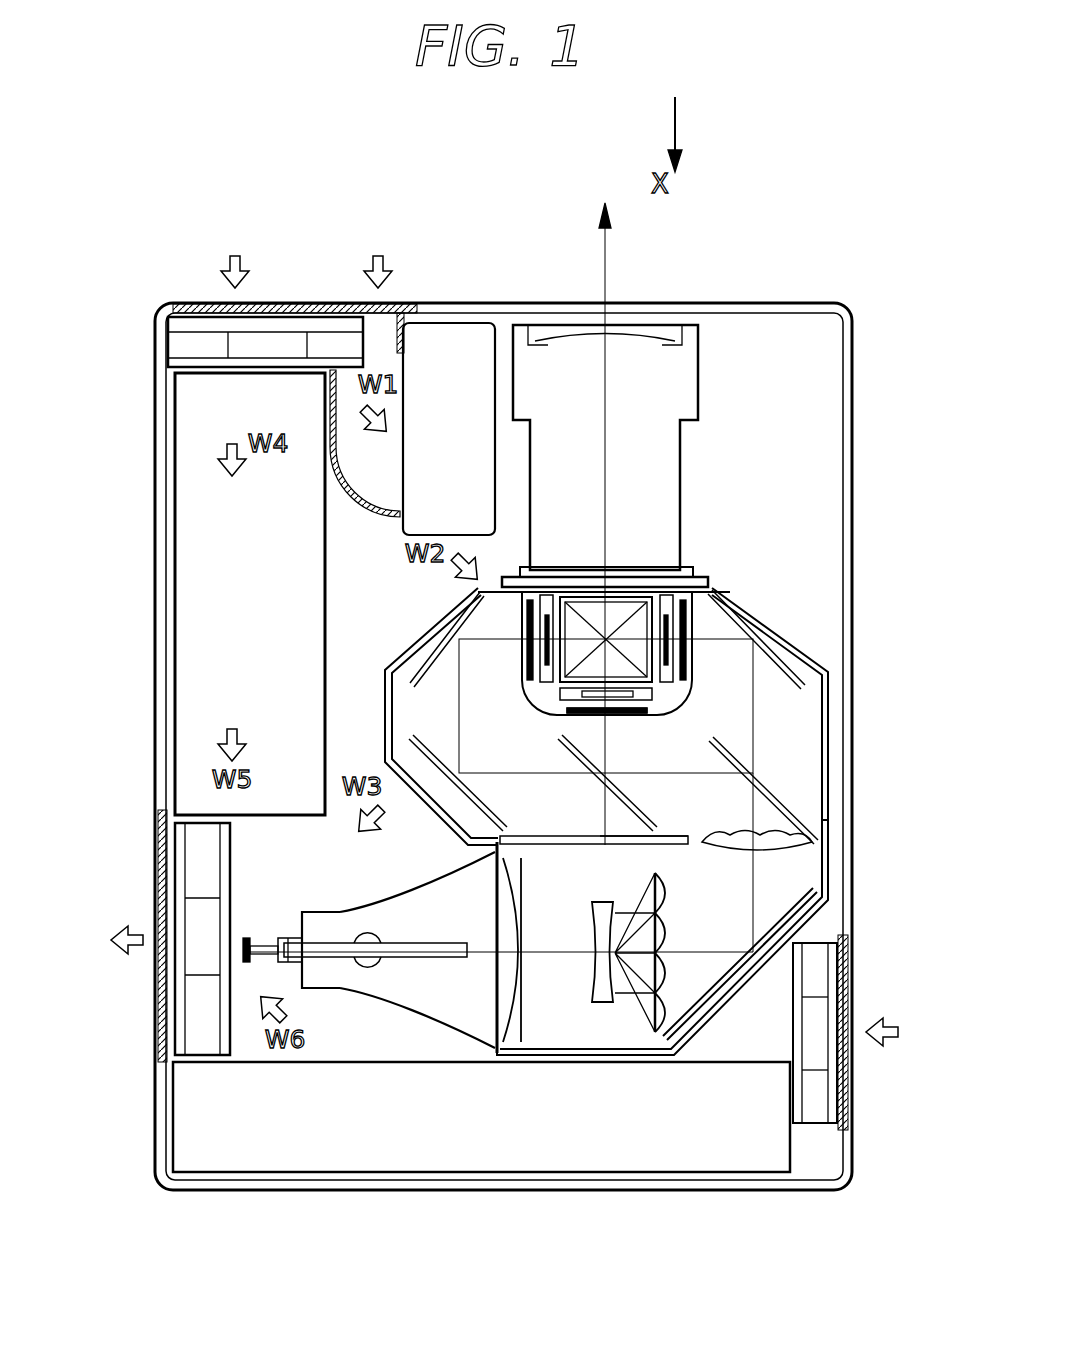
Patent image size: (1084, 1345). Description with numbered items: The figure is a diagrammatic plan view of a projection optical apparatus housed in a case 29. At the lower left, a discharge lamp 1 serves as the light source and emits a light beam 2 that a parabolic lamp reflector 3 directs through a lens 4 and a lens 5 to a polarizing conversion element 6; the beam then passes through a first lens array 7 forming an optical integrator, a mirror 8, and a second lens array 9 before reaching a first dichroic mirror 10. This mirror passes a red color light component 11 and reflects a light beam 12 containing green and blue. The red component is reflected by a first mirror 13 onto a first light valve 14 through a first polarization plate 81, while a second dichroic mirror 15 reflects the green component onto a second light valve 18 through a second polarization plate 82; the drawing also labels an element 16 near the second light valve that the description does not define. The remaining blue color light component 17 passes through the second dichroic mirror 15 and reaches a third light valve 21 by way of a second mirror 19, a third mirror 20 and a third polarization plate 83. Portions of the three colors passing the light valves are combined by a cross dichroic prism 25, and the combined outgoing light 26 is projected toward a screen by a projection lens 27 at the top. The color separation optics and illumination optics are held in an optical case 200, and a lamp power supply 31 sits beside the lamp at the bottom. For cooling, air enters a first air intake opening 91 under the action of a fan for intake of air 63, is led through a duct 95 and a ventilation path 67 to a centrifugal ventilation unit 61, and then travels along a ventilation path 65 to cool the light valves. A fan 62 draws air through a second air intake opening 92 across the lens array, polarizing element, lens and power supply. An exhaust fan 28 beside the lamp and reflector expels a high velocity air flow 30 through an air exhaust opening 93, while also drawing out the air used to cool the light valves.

The discharge lamp 1 is at (350, 965).
The light beam 2 is at (403, 953).
The lamp reflector 3 is at (385, 1010).
The lens 4 is at (512, 1010).
The lens 5 is at (598, 1000).
The polarizing conversion element 6 is at (630, 985).
The first lens array 7 is at (672, 1045).
The mirror 8 is at (826, 915).
The second lens array 9 is at (790, 855).
The first dichroic mirror 10 is at (780, 797).
The red color light component 11 is at (755, 745).
The light beam 12 is at (680, 777).
The first mirror 13 is at (745, 610).
The first light valve 14 is at (695, 585).
The second dichroic mirror 15 is at (625, 790).
The polarizing plate 16 is at (600, 720).
The blue color light component 17 is at (545, 775).
The second light valve 18 is at (660, 695).
The second mirror 19 is at (440, 815).
The third mirror 20 is at (400, 653).
The third light valve 21 is at (560, 717).
The cross dichroic prism 25 is at (625, 600).
The combined outgoing light 26 is at (605, 395).
The projection lens 27 is at (635, 345).
The exhaust fan 28 is at (195, 1035).
The case 29 is at (850, 373).
The high velocity air flow 30 is at (112, 940).
The lamp power supply 31 is at (768, 1155).
The ventilation unit 61 is at (480, 340).
The fan 62 is at (815, 980).
The fan for intake of air 63 is at (318, 342).
The ventilation path 65 is at (425, 583).
The ventilation path 67 is at (399, 318).
The first polarization plate 81 is at (760, 650).
The second polarization plate 82 is at (575, 712).
The third polarization plate 83 is at (532, 628).
The first air intake opening 91 is at (332, 305).
The second air intake opening 92 is at (850, 1088).
The air exhaust opening 93 is at (160, 985).
The duct 95 is at (363, 520).
The optical case 200 is at (826, 685).